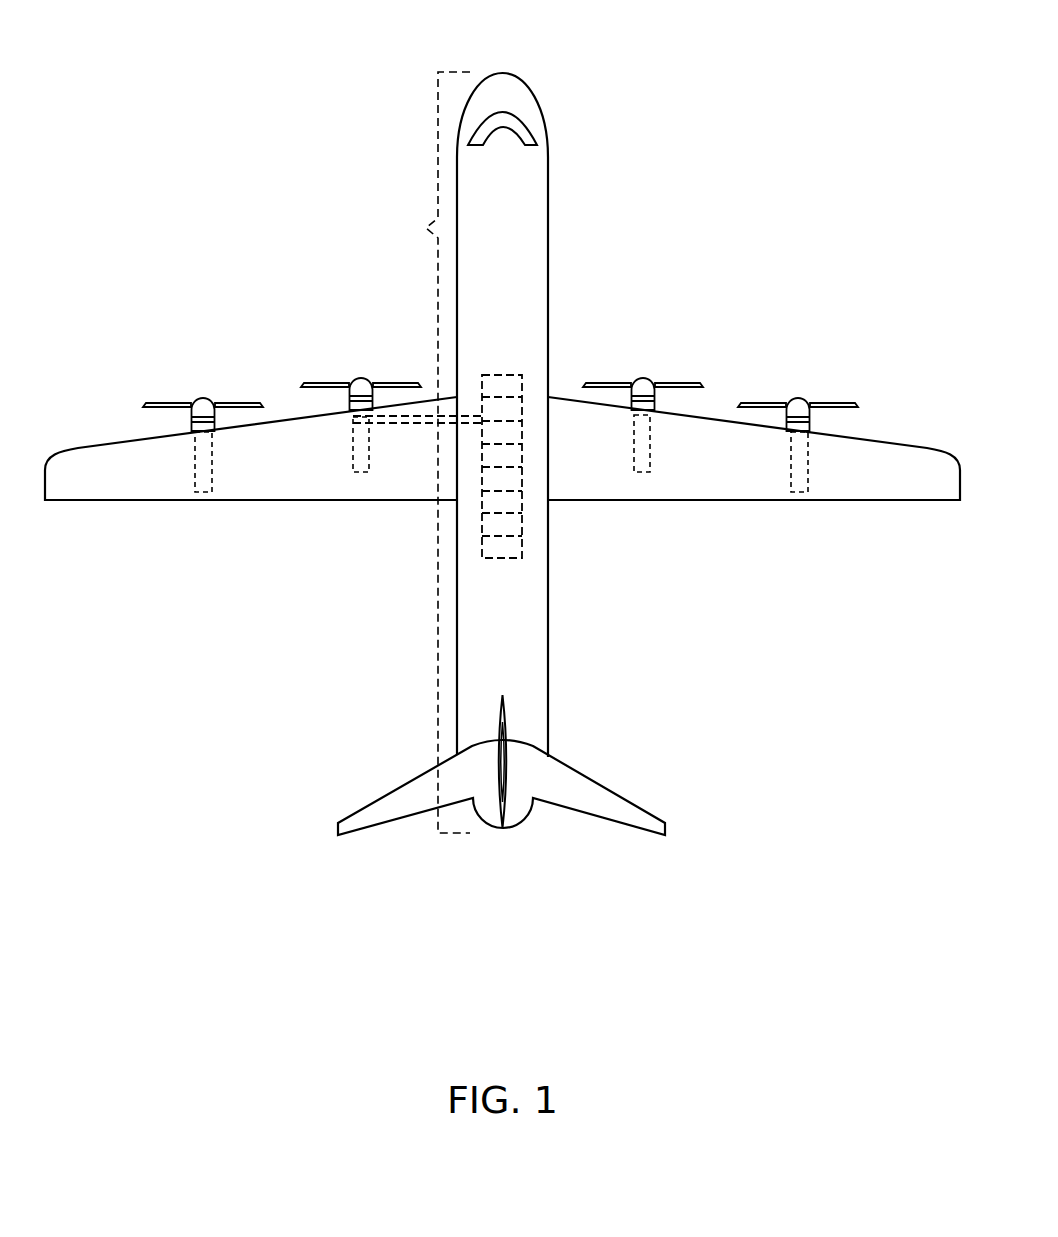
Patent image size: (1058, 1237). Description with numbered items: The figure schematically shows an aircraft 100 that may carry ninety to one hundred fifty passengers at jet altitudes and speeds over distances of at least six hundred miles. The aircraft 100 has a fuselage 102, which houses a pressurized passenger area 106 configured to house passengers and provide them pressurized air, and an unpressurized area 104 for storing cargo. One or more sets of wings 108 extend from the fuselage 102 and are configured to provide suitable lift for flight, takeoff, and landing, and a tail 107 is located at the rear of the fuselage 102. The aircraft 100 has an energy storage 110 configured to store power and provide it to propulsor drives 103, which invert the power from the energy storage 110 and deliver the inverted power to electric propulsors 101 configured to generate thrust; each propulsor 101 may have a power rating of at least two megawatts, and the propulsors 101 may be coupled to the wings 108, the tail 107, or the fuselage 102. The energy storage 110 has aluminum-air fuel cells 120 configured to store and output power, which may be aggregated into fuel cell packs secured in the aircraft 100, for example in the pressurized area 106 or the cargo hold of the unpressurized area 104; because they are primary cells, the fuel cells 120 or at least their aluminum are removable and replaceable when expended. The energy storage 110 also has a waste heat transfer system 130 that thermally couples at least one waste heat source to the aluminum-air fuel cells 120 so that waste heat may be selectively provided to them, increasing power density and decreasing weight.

The aircraft 100 is at (424, 56).
The electric propulsor 101 is at (203, 397).
The fuselage 102 is at (425, 452).
The propulsor drive 103 is at (203, 492).
The unpressurized area 104 is at (538, 268).
The pressurized passenger area 106 is at (531, 119).
The tail 107 is at (512, 766).
The wings 108 is at (413, 495).
The energy storage 110 is at (666, 277).
The aluminum-air fuel cells 120 is at (505, 375).
The waste heat transfer system 130 is at (412, 425).